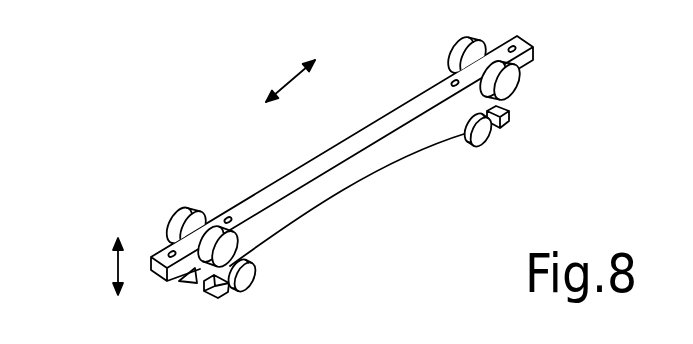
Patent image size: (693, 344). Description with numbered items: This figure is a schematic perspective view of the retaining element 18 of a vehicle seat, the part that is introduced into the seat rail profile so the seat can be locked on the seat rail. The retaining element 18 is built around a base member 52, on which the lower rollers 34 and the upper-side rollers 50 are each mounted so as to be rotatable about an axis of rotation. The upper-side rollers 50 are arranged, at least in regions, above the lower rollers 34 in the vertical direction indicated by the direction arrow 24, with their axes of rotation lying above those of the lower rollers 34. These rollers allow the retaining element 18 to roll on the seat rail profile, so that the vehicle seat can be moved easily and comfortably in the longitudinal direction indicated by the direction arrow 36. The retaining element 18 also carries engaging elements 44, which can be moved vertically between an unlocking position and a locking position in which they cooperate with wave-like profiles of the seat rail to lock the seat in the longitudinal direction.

The retaining element 18 is at (385, 230).
The direction arrow 24 is at (116, 272).
The lower rollers 34 is at (488, 147).
The direction arrow 36 is at (288, 85).
The engaging elements 44 is at (510, 122).
The upper-side rollers 50 is at (452, 50).
The base member 52 is at (297, 168).